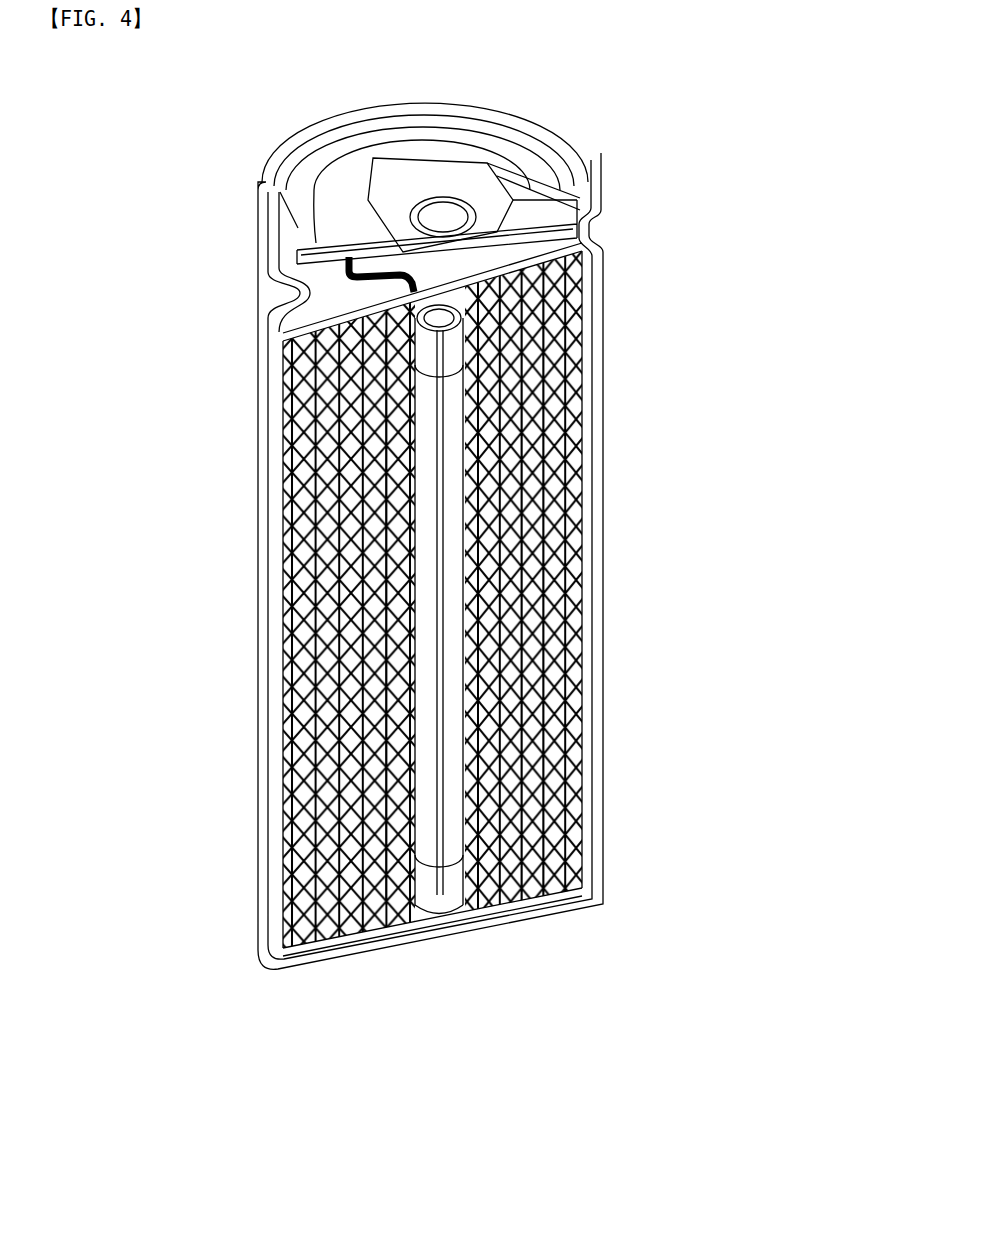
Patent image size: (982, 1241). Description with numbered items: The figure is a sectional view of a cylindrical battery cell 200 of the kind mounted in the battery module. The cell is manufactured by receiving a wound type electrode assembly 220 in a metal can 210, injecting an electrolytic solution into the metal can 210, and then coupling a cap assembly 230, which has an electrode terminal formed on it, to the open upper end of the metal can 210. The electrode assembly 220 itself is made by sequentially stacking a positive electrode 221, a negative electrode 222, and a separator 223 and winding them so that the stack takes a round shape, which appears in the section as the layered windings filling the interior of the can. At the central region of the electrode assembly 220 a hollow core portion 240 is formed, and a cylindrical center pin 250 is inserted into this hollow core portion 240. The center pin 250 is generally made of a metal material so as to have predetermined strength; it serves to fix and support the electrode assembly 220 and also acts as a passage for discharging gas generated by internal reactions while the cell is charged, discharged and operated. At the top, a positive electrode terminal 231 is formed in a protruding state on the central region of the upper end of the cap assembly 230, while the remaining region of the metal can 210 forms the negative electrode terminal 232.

The cylindrical battery cell 200 is at (158, 125).
The metal can 210 is at (607, 498).
The electrode assembly 220 is at (538, 694).
The positive electrode 221 is at (555, 855).
The negative electrode 222 is at (520, 870).
The separator 223 is at (556, 690).
The cap assembly 230 is at (513, 166).
The positive electrode terminal 231 is at (430, 160).
The negative electrode terminal 232 is at (259, 181).
The hollow core portion 240 is at (407, 612).
The center pin 250 is at (433, 558).